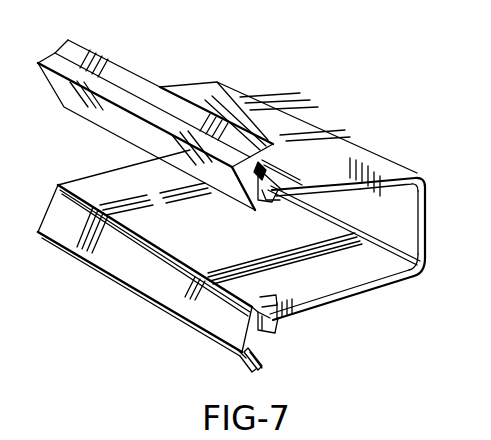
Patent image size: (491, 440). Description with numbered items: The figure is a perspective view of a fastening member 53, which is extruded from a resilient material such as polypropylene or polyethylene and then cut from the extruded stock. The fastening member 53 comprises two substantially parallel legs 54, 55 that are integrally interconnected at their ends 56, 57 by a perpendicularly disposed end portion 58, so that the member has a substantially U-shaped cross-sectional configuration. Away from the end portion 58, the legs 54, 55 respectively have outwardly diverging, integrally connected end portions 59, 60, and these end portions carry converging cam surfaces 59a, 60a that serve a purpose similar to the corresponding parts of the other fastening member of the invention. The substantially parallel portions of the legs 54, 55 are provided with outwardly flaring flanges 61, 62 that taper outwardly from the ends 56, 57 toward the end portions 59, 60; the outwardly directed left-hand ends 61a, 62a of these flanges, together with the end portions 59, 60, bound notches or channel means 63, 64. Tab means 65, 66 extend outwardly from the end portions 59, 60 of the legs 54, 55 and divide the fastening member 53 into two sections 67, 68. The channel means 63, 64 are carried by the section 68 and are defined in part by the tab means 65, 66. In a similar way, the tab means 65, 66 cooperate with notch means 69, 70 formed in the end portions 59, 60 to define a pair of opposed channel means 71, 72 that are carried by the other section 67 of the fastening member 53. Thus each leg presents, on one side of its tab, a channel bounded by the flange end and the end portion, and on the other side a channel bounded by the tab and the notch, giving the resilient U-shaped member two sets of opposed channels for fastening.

The fastening member 53 is at (346, 117).
The leg 54 is at (335, 175).
The leg 55 is at (340, 295).
The end 56 is at (392, 181).
The end 57 is at (408, 280).
The end portion 58 is at (421, 222).
The end portion 59 is at (128, 120).
The cam surface 59a is at (240, 126).
The end portion 60 is at (118, 282).
The cam surface 60a is at (235, 355).
The flange 61 is at (285, 185).
The left-hand end of flange 61a is at (283, 200).
The flange 62 is at (290, 318).
The left-hand end of flange 62a is at (270, 310).
The channel means 63 is at (270, 184).
The channel means 64 is at (261, 326).
The tab means 65 is at (233, 147).
The tab means 66 is at (264, 368).
The section 67 is at (124, 52).
The section 68 is at (413, 127).
The notch means 69 is at (262, 172).
The notch means 70 is at (246, 366).
The channel means 71 is at (171, 103).
The channel means 72 is at (258, 362).